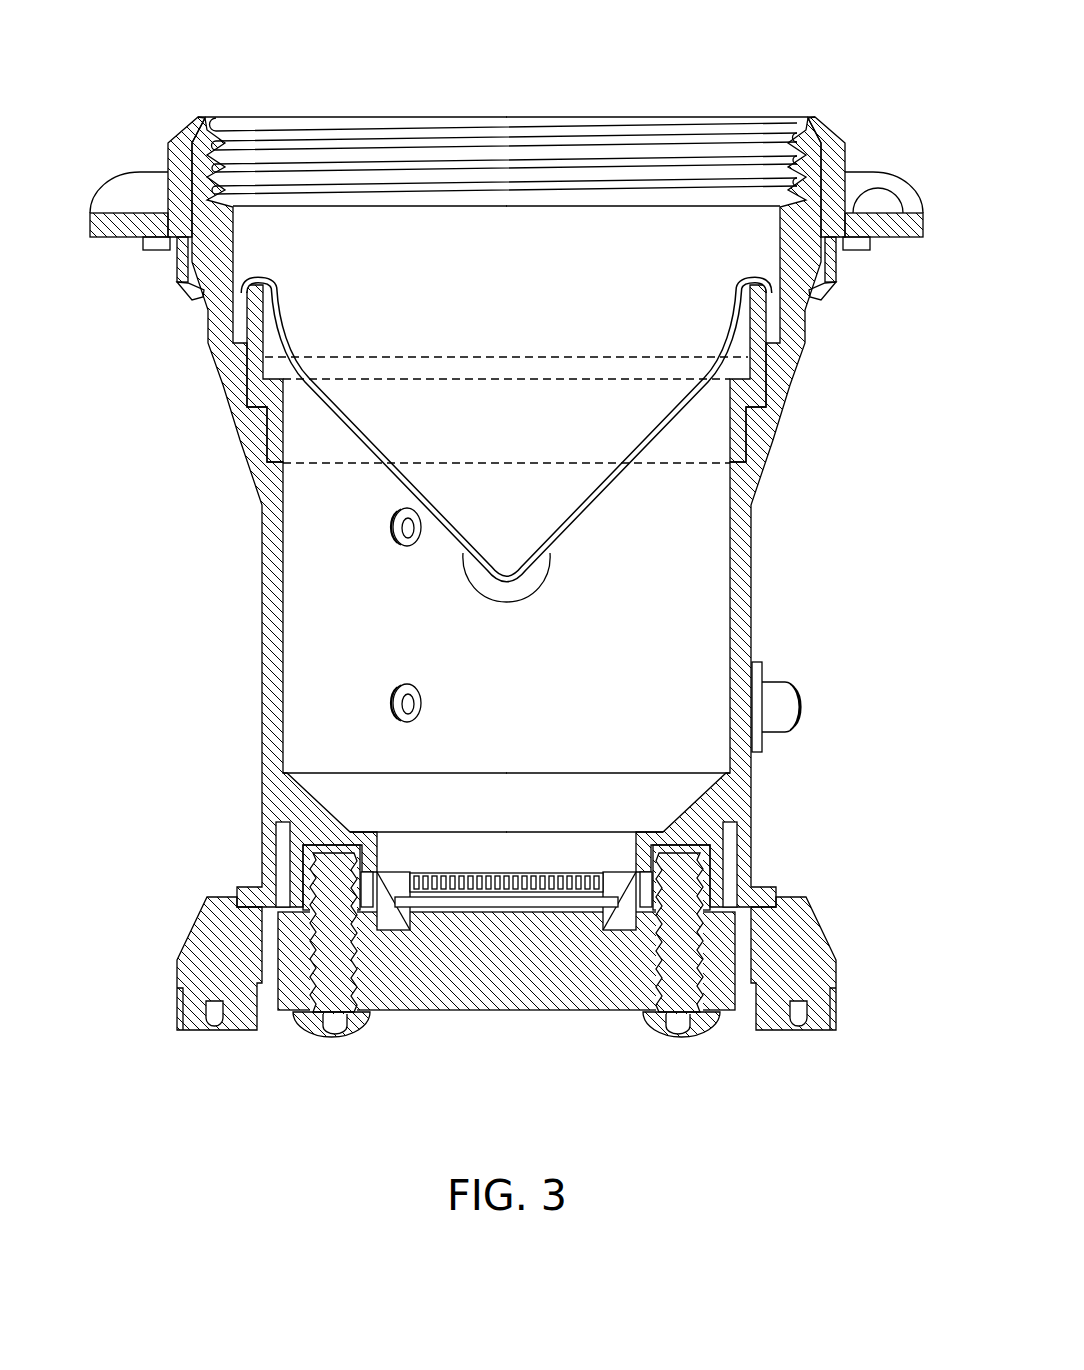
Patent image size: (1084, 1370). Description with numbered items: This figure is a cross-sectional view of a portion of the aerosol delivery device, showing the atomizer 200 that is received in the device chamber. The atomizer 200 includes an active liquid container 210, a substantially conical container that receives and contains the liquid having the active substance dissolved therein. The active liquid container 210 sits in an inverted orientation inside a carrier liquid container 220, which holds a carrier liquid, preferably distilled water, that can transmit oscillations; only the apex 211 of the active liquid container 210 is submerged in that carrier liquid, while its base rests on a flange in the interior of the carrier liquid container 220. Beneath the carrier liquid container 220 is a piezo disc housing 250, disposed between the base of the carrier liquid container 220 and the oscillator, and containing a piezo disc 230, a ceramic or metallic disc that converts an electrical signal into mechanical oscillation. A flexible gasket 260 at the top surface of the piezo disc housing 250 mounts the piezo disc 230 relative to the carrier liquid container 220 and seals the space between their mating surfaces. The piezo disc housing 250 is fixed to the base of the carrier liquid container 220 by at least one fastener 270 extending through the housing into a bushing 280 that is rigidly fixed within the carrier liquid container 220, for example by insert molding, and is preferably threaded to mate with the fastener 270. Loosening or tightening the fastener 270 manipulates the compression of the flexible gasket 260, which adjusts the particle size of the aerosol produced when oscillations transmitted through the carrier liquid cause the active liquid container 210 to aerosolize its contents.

The atomizer 200 is at (152, 70).
The active liquid container 210 is at (607, 492).
The apex 211 is at (533, 583).
The carrier liquid container 220 is at (740, 545).
The piezo disc 230 is at (500, 908).
The piezo disc housing 250 is at (562, 1010).
The flexible gasket 260 is at (393, 933).
The fastener 270 is at (305, 1028).
The bushing 280 is at (312, 888).